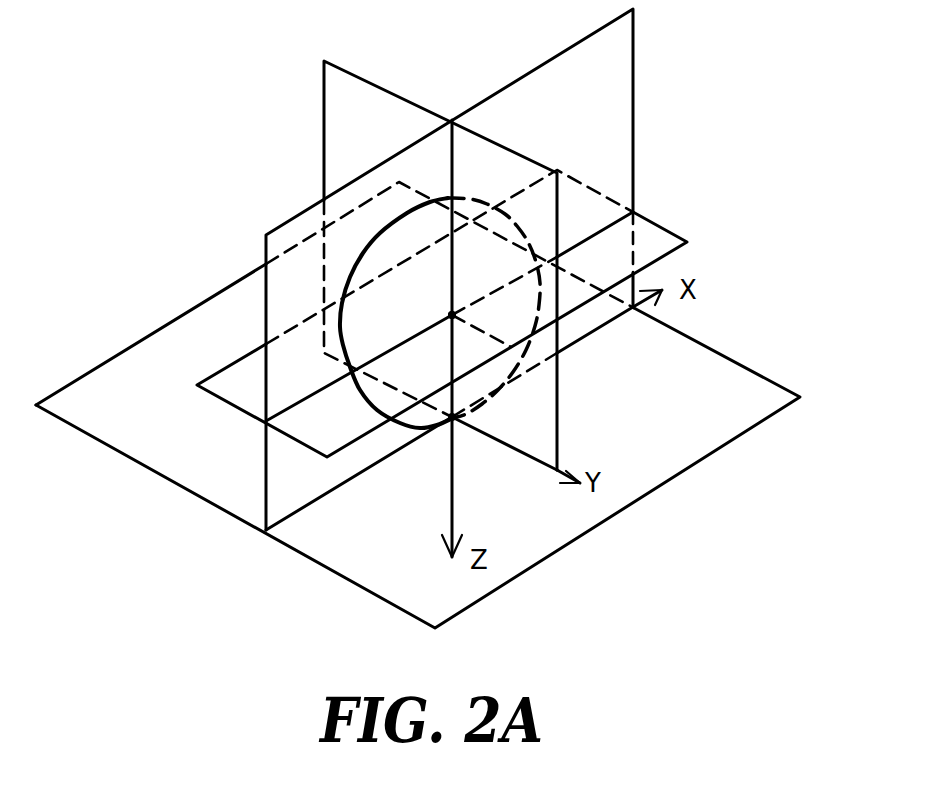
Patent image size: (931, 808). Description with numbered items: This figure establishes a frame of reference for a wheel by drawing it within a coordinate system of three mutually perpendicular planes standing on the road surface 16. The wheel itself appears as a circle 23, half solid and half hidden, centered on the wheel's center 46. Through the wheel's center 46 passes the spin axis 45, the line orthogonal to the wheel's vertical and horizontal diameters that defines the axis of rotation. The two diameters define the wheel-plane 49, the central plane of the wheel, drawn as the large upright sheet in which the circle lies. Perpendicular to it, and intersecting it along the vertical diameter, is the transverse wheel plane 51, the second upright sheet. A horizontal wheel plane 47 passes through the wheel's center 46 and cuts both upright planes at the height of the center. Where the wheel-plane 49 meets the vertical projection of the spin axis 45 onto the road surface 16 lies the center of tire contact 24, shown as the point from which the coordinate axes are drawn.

The road surface 16 is at (347, 579).
The circular path 23 is at (398, 212).
The center of tire contact 24 is at (455, 421).
The spin axis 45 is at (452, 315).
The wheel's center 46 is at (452, 315).
The horizontal wheel plane 47 is at (687, 242).
The wheel-plane 49 is at (635, 47).
The transverse wheel plane 51 is at (323, 72).